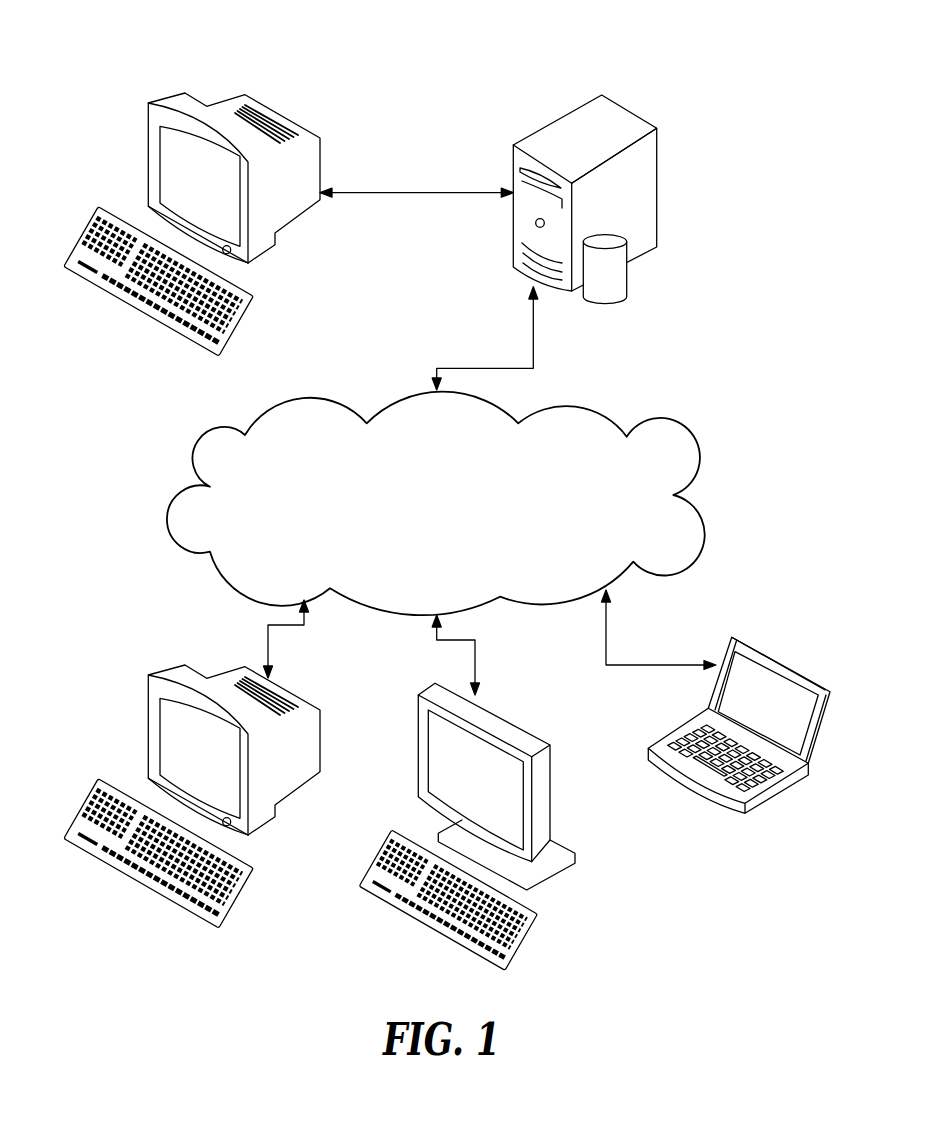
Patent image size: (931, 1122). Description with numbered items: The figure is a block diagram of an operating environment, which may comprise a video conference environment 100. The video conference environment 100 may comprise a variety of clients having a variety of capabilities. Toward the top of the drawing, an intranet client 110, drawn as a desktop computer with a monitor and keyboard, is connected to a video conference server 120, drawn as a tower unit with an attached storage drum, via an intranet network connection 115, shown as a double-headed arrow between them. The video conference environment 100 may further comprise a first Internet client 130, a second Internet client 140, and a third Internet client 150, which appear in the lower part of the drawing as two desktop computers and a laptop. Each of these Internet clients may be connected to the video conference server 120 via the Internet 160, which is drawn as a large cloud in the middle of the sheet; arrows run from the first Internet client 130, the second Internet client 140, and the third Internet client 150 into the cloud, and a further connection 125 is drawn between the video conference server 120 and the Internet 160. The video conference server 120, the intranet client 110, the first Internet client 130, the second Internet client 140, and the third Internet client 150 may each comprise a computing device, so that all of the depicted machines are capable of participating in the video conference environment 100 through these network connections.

The video conference environment 100 is at (431, 18).
The intranet client 110 is at (300, 129).
The intranet network connection 115 is at (401, 190).
The video conference server 120 is at (630, 112).
The communication link 125 is at (460, 369).
The first Internet client 130 is at (300, 701).
The second Internet client 140 is at (515, 719).
The third Internet client 150 is at (755, 642).
The Internet 160 is at (643, 433).